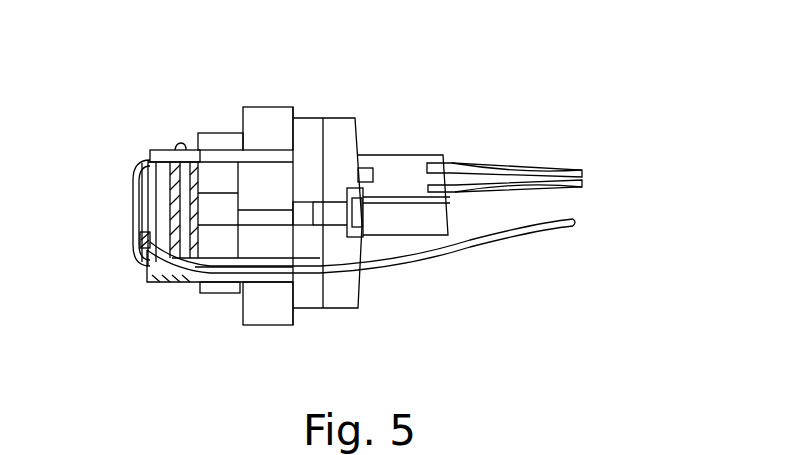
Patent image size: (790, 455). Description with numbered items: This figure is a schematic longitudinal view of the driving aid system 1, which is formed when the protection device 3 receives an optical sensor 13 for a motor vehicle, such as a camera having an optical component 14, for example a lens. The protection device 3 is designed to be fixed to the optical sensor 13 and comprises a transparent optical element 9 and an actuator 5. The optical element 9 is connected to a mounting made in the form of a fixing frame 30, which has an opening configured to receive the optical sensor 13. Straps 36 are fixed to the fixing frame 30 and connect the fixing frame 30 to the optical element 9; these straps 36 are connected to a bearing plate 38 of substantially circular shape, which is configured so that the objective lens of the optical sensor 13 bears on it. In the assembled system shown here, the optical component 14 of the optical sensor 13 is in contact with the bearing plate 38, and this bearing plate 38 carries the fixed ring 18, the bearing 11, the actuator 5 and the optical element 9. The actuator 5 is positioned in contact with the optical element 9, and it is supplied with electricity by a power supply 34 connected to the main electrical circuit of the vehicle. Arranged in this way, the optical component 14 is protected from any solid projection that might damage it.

The driving aid system 1 is at (486, 50).
The protection device 3 is at (297, 107).
The actuator 5 is at (135, 235).
The transparent optical element 9 is at (140, 213).
The bearing 11 is at (133, 258).
The optical sensor 13 is at (409, 163).
The optical component 14 is at (170, 158).
The fixed ring 18 is at (138, 268).
The fixing frame 30 is at (278, 317).
The power supply 34 is at (457, 246).
The straps 36 is at (227, 295).
The bearing plate 38 is at (142, 160).